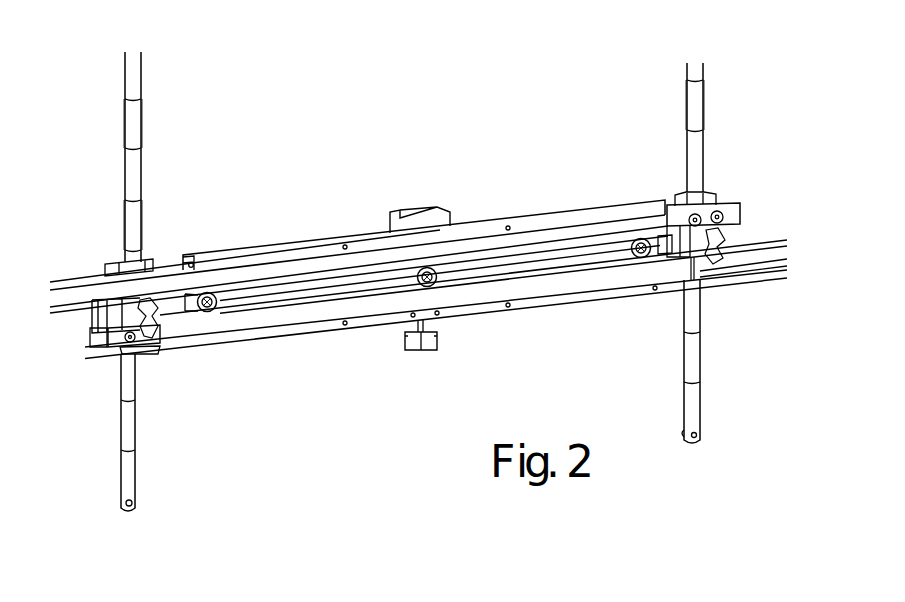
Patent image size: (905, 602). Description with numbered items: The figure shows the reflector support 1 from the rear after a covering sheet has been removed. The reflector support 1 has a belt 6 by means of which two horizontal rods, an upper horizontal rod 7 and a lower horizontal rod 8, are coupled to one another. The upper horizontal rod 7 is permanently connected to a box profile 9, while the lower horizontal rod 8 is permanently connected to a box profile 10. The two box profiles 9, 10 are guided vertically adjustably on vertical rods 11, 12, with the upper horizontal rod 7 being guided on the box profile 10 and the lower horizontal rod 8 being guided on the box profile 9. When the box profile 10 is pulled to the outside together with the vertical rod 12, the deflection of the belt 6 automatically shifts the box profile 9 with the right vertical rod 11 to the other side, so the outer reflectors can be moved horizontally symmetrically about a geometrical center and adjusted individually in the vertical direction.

The reflector support 1 is at (597, 98).
The belt 6 is at (186, 300).
The upper horizontal rod 7 is at (288, 264).
The lower horizontal rod 8 is at (290, 313).
The box profile 9 is at (693, 283).
The box profile 10 is at (110, 262).
The vertical rod 11 is at (695, 147).
The vertical rod 12 is at (127, 129).